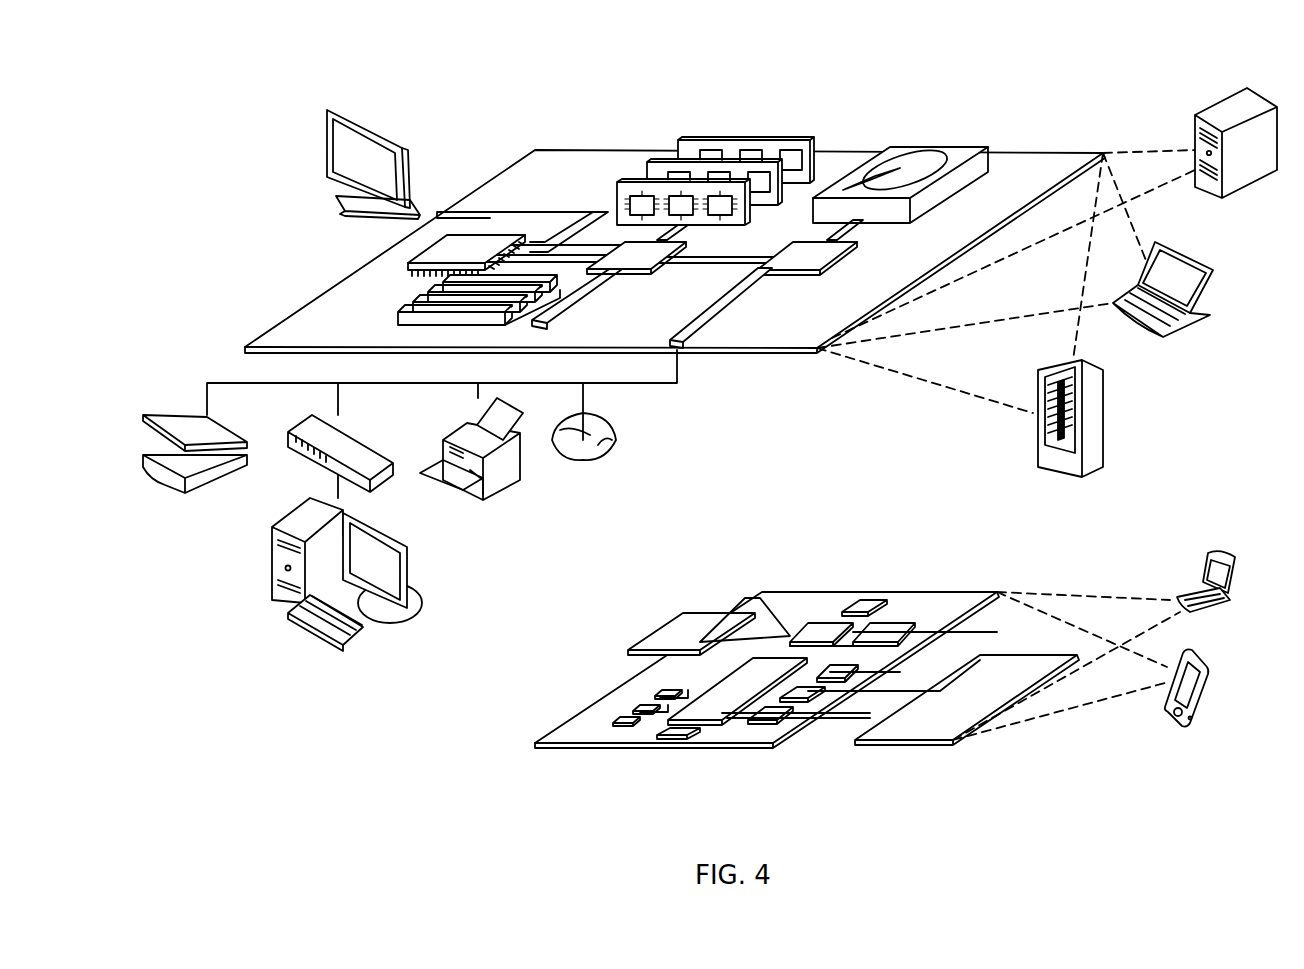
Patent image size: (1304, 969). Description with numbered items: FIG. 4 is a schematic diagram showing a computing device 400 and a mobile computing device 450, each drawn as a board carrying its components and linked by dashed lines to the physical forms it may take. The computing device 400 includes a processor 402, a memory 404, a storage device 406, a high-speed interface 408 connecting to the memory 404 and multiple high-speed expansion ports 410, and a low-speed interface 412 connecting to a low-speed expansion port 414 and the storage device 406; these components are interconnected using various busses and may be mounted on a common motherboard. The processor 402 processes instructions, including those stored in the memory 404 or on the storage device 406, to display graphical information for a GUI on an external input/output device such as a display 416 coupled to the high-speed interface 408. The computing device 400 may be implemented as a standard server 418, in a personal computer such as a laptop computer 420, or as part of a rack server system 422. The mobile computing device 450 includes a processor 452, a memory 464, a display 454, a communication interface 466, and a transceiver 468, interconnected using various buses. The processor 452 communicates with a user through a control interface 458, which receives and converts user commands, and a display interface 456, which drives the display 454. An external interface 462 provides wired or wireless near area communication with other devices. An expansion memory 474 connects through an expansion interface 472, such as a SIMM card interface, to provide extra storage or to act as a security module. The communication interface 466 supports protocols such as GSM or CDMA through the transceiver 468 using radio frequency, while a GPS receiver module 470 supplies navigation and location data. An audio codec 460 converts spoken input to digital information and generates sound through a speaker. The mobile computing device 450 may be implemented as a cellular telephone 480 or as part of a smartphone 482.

The computing device 400 is at (520, 111).
The processor 402 is at (417, 255).
The memory 404 is at (745, 140).
The storage device 406 is at (935, 146).
The high-speed interface 408 is at (631, 272).
The high-speed expansion ports 410 is at (395, 318).
The low-speed interface 412 is at (845, 262).
The low-speed expansion port 414 is at (730, 312).
The display 416 is at (326, 108).
The standard server 418 is at (1216, 103).
The laptop computer 420 is at (1212, 272).
The rack server system 422 is at (1103, 422).
The mobile computing device 450 is at (732, 536).
The processor 452 is at (727, 672).
The display 454 is at (903, 743).
The display interface 456 is at (763, 725).
The control interface 458 is at (800, 703).
The audio codec 460 is at (833, 683).
The external interface 462 is at (670, 743).
The memory 464 is at (612, 717).
The communication interface 466 is at (825, 622).
The transceiver 468 is at (892, 622).
The GPS receiver module 470 is at (873, 597).
The expansion interface 472 is at (753, 618).
The expansion memory 474 is at (660, 625).
The cellular telephone 480 is at (1236, 556).
The smartphone 482 is at (1205, 665).